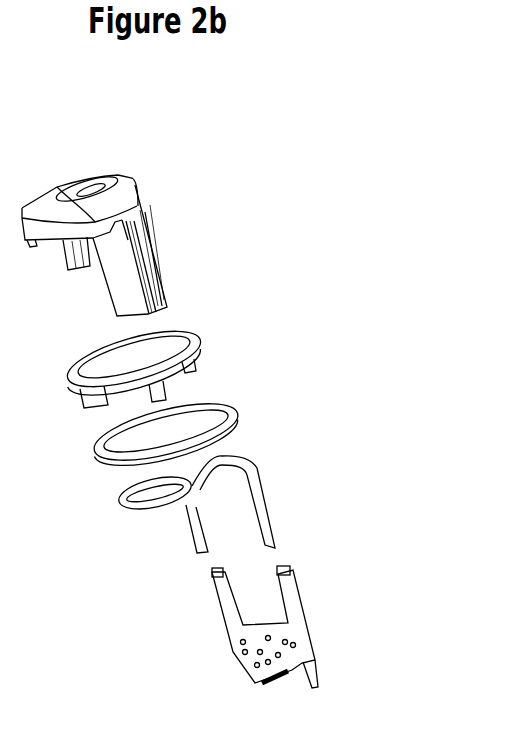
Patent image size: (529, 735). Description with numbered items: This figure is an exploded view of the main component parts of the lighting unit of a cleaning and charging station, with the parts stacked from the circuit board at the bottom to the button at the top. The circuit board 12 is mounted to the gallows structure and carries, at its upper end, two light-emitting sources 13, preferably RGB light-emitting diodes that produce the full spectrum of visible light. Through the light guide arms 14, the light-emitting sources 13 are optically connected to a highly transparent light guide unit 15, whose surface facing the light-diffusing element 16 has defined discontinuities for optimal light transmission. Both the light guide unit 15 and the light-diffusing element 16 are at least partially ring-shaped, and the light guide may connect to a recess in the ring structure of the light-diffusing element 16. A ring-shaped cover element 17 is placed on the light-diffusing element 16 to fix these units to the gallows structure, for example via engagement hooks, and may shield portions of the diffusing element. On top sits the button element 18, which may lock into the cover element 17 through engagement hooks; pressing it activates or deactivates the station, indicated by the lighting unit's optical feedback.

The circuit board 12 is at (237, 652).
The light-emitting sources 13 is at (220, 577).
The light guide arms 14 is at (275, 518).
The light guide unit 15 is at (250, 462).
The light-diffusing element 16 is at (233, 413).
The cover element 17 is at (200, 340).
The button element 18 is at (96, 180).